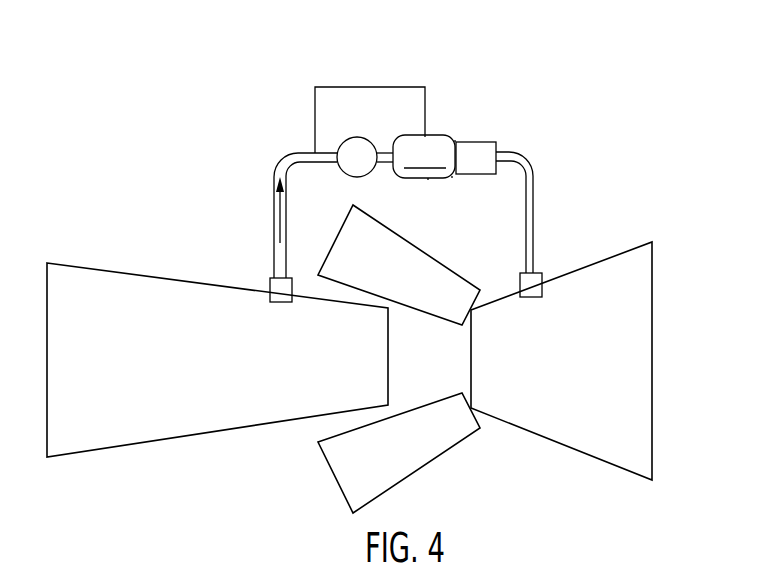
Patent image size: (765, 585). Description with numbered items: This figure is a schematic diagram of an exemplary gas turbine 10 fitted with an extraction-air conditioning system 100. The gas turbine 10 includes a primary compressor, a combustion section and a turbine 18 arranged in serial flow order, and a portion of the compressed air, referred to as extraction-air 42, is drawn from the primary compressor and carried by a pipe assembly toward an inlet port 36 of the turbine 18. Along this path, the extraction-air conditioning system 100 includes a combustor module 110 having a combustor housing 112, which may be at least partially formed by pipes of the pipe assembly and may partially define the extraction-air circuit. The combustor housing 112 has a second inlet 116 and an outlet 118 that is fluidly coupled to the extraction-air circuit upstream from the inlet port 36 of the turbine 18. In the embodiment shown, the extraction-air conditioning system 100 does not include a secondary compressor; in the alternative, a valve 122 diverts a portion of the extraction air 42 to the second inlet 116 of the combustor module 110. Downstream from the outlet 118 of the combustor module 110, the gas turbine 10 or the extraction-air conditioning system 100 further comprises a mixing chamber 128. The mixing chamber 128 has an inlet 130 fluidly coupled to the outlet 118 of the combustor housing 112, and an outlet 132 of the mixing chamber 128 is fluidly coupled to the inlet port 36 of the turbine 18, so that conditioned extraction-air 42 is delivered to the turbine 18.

The gas turbine 10 is at (116, 212).
The turbine 18 is at (551, 448).
The inlet port 36 is at (537, 282).
The extraction-air 42 is at (277, 217).
The extraction-air conditioning system 100 is at (545, 80).
The combustor module 110 is at (416, 156).
The combustor housing 112 is at (428, 180).
The second inlet 116 is at (427, 135).
The outlet 118 is at (457, 138).
The valve 122 is at (342, 172).
The mixing chamber 128 is at (477, 155).
The inlet 130 is at (452, 178).
The outlet 132 is at (498, 152).